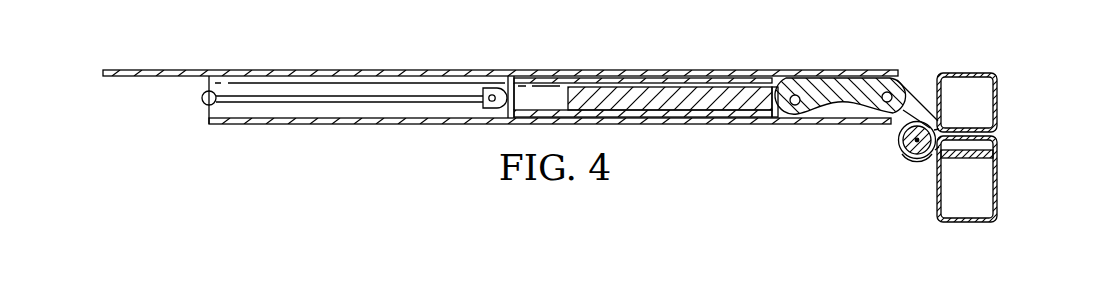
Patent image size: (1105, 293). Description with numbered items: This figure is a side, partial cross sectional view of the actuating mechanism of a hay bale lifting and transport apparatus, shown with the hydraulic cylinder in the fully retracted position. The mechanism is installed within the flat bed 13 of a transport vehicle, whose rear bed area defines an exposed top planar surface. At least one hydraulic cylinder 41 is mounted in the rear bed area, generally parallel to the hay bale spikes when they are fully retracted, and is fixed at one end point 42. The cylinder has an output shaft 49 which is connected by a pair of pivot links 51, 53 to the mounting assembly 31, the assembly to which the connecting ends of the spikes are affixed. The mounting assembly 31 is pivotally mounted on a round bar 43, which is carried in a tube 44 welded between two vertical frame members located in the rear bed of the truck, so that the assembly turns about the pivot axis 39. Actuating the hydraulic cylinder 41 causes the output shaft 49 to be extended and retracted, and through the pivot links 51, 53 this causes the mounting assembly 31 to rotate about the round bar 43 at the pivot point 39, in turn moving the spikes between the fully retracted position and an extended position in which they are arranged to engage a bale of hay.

The flat bed 13 is at (322, 70).
The mounting assembly 31 is at (1004, 147).
The pivot axis 39 is at (903, 160).
The hydraulic cylinder 41 is at (543, 88).
The fixed end point 42 is at (201, 98).
The round bar 43 is at (905, 133).
The tube 44 is at (918, 162).
The output shaft 49 is at (688, 90).
The pivot link 51 is at (848, 82).
The pivot link 53 is at (912, 105).